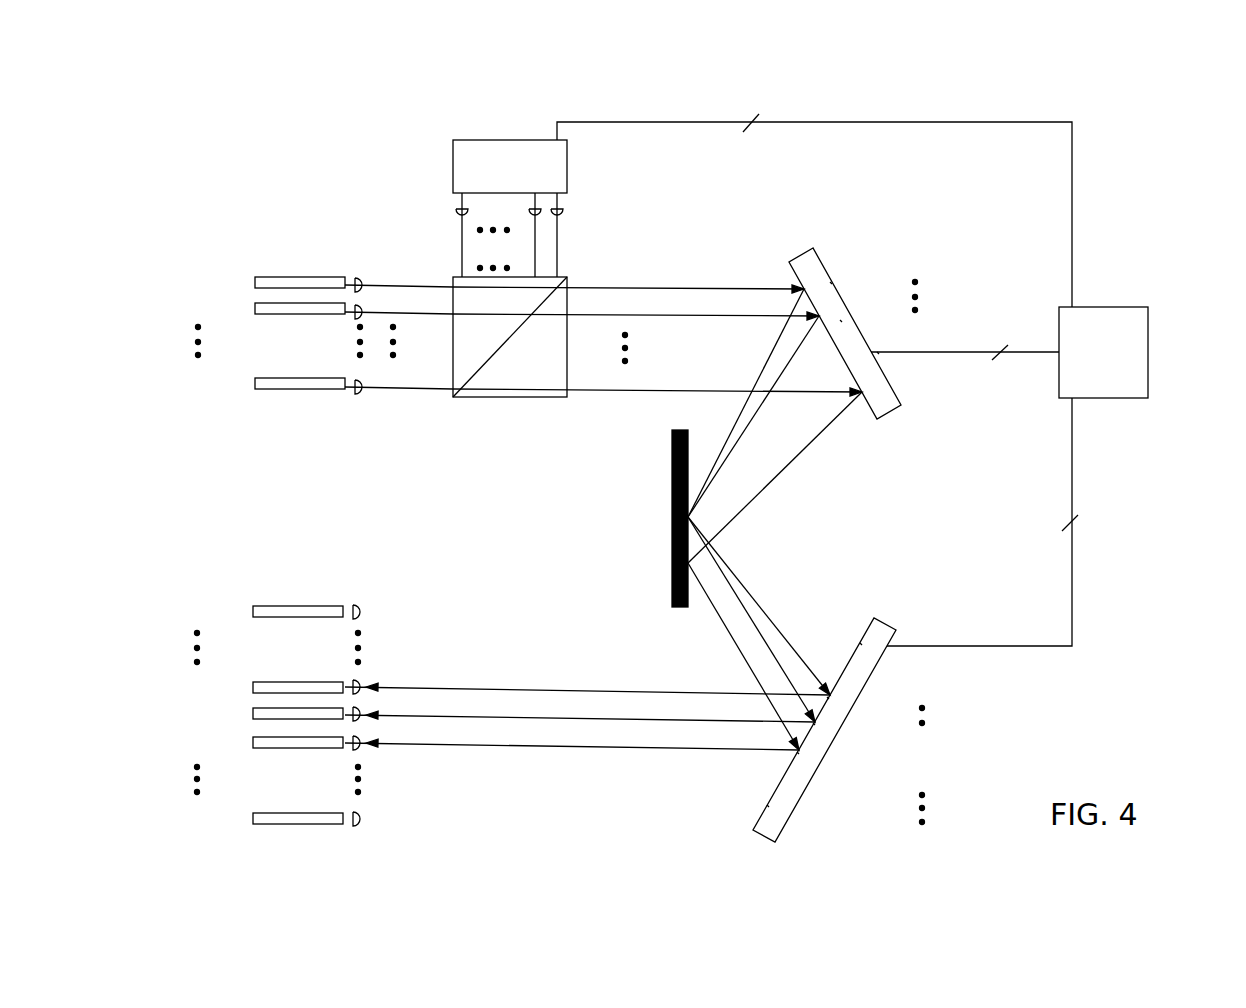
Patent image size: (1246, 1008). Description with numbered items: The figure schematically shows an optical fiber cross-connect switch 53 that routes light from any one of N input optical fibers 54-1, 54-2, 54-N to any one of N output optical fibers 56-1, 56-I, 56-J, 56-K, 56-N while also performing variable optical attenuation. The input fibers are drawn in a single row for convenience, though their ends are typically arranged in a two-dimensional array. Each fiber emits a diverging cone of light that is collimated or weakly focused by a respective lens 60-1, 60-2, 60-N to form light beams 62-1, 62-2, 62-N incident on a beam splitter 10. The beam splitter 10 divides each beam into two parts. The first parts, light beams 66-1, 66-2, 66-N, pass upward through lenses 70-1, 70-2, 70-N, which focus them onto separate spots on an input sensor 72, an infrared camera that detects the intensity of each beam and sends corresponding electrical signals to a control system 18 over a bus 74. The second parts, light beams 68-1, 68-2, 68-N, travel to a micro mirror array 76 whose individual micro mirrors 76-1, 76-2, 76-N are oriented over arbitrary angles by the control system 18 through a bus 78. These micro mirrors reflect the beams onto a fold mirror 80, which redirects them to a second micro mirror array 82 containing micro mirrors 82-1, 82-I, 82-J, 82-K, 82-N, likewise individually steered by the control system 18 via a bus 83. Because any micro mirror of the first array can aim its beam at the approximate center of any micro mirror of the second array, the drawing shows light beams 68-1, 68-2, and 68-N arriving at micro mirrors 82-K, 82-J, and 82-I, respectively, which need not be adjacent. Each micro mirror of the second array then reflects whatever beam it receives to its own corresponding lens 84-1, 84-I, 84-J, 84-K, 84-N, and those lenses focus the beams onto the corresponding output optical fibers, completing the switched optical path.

The optical fiber cross-connect switch 53 is at (326, 82).
The input optical fiber 54-1 is at (258, 278).
The input optical fiber 54-2 is at (258, 304).
The input optical fiber 54-N is at (258, 379).
The lens 60-1 is at (360, 276).
The lens 60-2 is at (353, 318).
The lens 60-N is at (368, 392).
The light beam 62-1 is at (442, 283).
The light beam 62-2 is at (442, 309).
The light beam 62-N is at (442, 384).
The beam splitter 10 is at (508, 398).
The input sensor 72 is at (512, 140).
The light beam 66-1 is at (557, 238).
The light beam 66-2 is at (535, 240).
The light beam 66-N is at (462, 236).
The lens 70-1 is at (567, 212).
The lens 70-2 is at (530, 212).
The lens 70-N is at (455, 212).
The light beam 68-1 is at (667, 289).
The light beam 68-2 is at (667, 316).
The light beam 68-N is at (667, 392).
The micro mirror array 76 is at (805, 258).
The micro mirror 76-1 is at (830, 282).
The micro mirror 76-2 is at (840, 320).
The micro mirror 76-N is at (878, 352).
The bus 74 is at (812, 122).
The bus 78 is at (933, 355).
The bus 83 is at (1071, 491).
The control system 18 is at (1150, 338).
The fold mirror 80 is at (672, 515).
The micro mirror array 82 is at (763, 835).
The micro mirror 82-1 is at (861, 643).
The micro mirror 82-I is at (827, 697).
The micro mirror 82-J is at (813, 723).
The micro mirror 82-K is at (797, 752).
The micro mirror 82-N is at (767, 805).
The output optical fiber 56-1 is at (260, 604).
The output optical fiber 56-I is at (260, 678).
The output optical fiber 56-J is at (260, 705).
The output optical fiber 56-K is at (260, 734).
The output optical fiber 56-N is at (260, 810).
The lens 84-1 is at (365, 613).
The lens 84-I is at (365, 684).
The lens 84-J is at (365, 712).
The lens 84-K is at (365, 740).
The lens 84-N is at (363, 823).